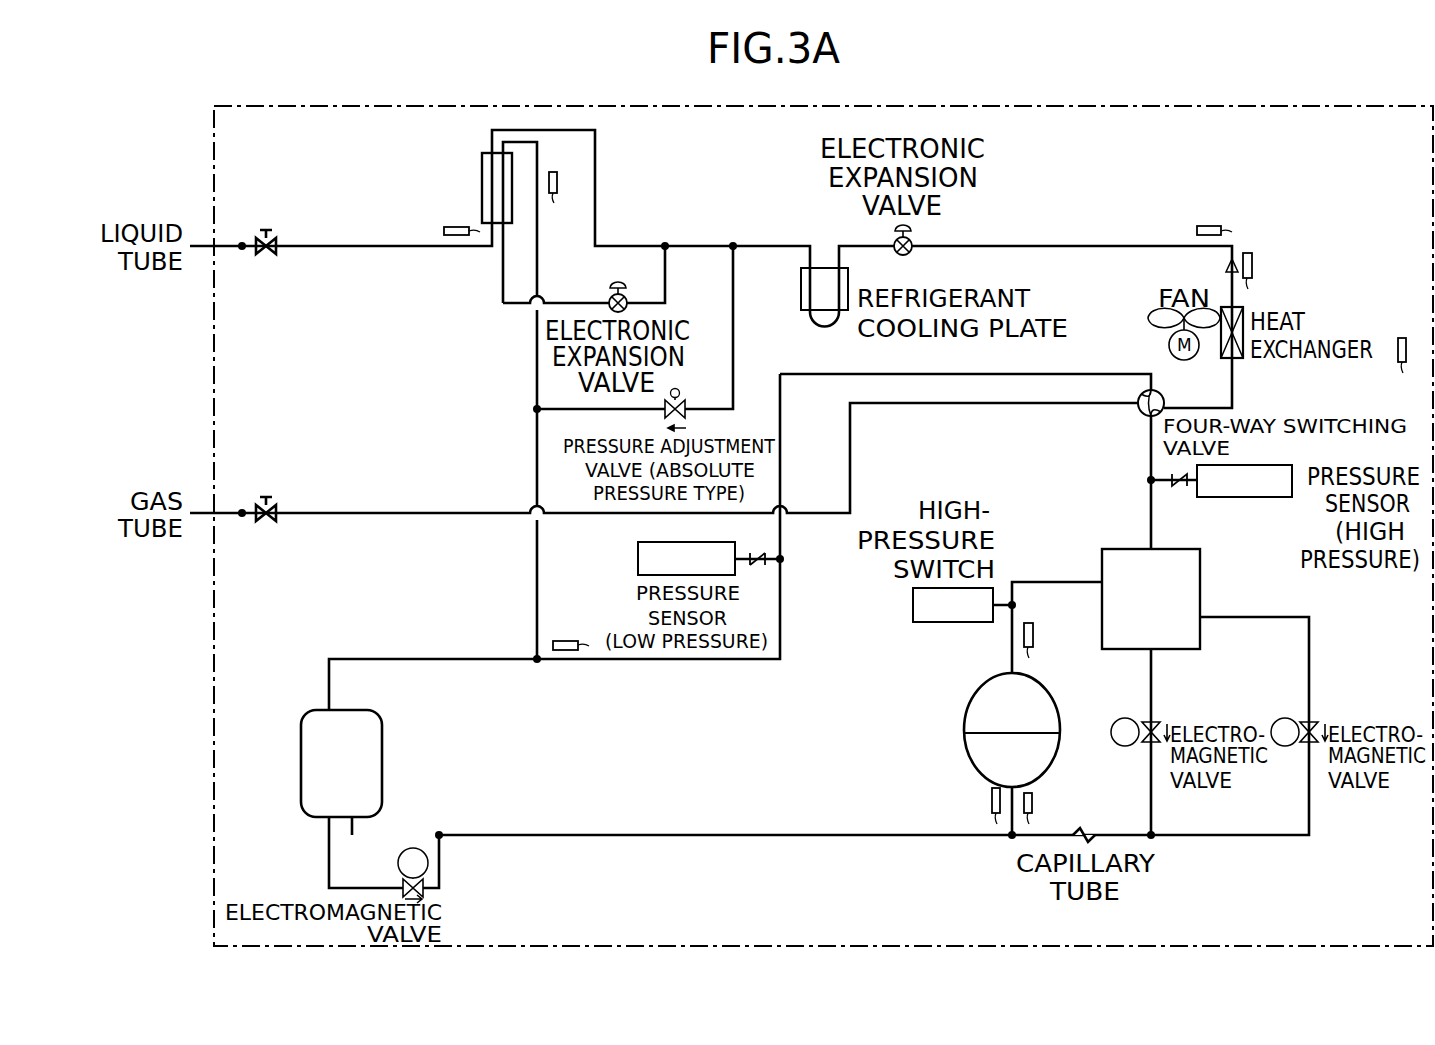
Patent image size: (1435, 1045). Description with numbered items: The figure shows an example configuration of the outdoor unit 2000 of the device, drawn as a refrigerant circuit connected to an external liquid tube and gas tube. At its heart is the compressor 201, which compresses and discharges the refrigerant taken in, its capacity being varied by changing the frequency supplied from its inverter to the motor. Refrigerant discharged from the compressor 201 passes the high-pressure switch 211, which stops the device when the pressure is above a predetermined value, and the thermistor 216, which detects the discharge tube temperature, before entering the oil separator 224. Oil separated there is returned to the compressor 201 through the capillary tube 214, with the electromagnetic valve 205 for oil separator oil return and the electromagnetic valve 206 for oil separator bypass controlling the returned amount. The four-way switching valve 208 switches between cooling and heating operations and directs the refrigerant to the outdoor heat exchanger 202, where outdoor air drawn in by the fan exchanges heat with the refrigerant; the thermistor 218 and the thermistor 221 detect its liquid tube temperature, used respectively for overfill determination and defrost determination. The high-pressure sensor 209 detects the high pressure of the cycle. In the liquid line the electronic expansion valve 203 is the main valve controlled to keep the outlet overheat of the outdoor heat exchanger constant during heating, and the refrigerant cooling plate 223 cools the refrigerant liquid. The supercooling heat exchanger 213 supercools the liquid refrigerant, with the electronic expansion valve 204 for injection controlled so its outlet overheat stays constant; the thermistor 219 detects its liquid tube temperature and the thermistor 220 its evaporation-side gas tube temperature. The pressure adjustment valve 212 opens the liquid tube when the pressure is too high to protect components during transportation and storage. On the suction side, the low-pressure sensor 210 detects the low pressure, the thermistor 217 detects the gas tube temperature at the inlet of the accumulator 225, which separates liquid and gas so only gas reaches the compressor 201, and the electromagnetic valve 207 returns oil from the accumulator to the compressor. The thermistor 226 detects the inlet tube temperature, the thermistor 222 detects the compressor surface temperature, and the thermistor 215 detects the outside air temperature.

The outdoor unit 2000 is at (1140, 106).
The compressor 201 is at (981, 690).
The outdoor heat exchanger 202 is at (1243, 354).
The electronic expansion valve 203 is at (910, 254).
The electronic expansion valve 204 is at (606, 299).
The electromagnetic valve 205 is at (1158, 722).
The electromagnetic valve 206 is at (1314, 722).
The electromagnetic valve 207 is at (428, 892).
The four-way switching valve 208 is at (1141, 411).
The high-pressure sensor 209 is at (1240, 498).
The low-pressure sensor 210 is at (638, 559).
The high-pressure switch 211 is at (913, 605).
The pressure adjustment valve 212 is at (682, 400).
The supercooling heat exchanger 213 is at (481, 190).
The capillary tube 214 is at (1090, 830).
The thermistor 215 is at (1401, 336).
The thermistor 216 is at (1034, 635).
The thermistor 217 is at (563, 641).
The thermistor 218 is at (1198, 226).
The thermistor 219 is at (445, 226).
The thermistor 220 is at (559, 180).
The thermistor 221 is at (1253, 265).
The thermistor 222 is at (990, 800).
The refrigerant cooling plate 223 is at (803, 317).
The oil separator 224 is at (1109, 549).
The accumulator 225 is at (383, 765).
The thermistor 226 is at (1034, 803).